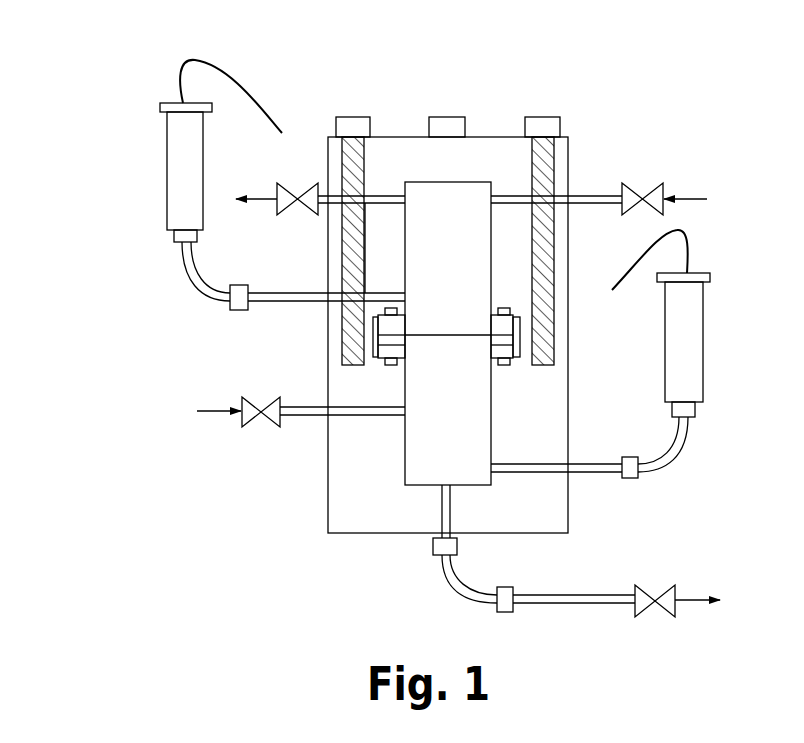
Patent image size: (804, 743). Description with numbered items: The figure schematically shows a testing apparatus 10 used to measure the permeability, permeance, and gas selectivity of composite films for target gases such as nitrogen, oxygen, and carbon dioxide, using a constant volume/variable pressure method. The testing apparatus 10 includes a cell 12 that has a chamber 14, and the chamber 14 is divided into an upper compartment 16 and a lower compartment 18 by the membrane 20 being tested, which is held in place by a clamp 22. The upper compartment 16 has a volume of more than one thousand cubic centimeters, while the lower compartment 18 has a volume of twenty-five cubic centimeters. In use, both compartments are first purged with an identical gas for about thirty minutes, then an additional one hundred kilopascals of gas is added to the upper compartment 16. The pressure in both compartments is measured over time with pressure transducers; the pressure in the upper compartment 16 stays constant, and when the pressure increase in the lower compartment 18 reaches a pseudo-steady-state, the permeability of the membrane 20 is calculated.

The testing apparatus 10 is at (317, 352).
The cell 12 is at (499, 281).
The chamber 14 is at (422, 192).
The upper compartment 16 is at (469, 259).
The lower compartment 18 is at (465, 390).
The membrane 20 is at (440, 336).
The clamp 22 is at (514, 362).